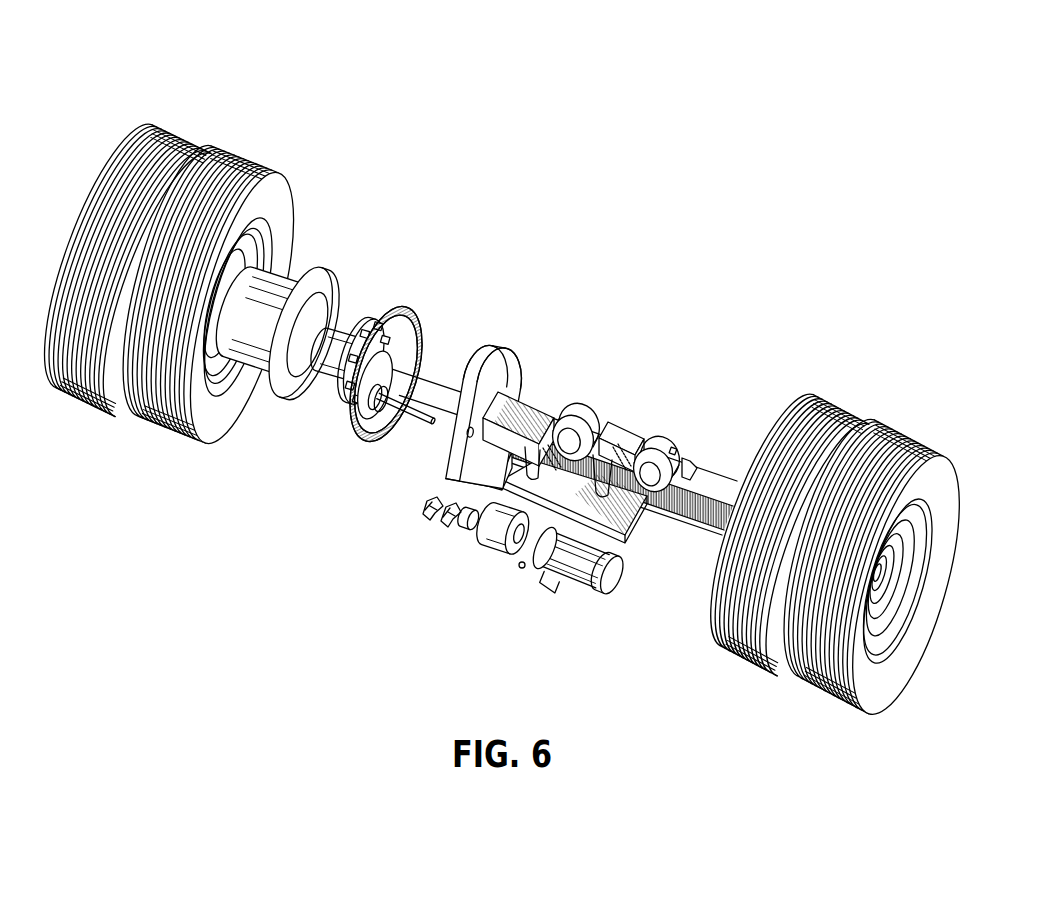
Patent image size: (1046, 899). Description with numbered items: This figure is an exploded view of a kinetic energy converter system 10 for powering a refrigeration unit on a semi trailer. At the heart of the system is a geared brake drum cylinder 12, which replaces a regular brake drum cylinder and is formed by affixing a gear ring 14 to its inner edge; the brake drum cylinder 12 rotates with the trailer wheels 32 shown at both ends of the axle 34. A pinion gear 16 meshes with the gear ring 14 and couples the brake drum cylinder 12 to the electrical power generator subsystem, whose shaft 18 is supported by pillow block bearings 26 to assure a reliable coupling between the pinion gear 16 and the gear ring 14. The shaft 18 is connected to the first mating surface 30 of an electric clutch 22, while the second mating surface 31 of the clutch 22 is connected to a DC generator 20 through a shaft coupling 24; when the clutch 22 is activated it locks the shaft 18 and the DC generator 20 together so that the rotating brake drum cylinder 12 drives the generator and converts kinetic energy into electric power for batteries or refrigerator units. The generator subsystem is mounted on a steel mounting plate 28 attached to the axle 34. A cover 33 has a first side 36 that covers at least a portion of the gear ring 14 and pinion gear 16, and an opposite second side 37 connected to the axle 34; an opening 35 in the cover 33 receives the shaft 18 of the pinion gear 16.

The kinetic energy converter system 10 is at (305, 84).
The geared brake drum cylinder 12 is at (297, 273).
The gear ring 14 is at (413, 313).
The pinion gear 16 is at (397, 360).
The shaft 18 is at (413, 418).
The DC generator 20 is at (550, 580).
The electric clutch 22 is at (503, 557).
The shaft coupling 24 is at (467, 527).
The pillow block bearings 26 is at (425, 518).
The steel mounting plate 28 is at (531, 437).
The first mating surface 30 is at (482, 542).
The second mating surface 31 is at (522, 568).
The trailer wheels 32 is at (177, 440).
The cover 33 is at (497, 350).
The axle 34 is at (518, 403).
The opening 35 is at (468, 434).
The first side 36 is at (472, 374).
The second side 37 is at (512, 360).